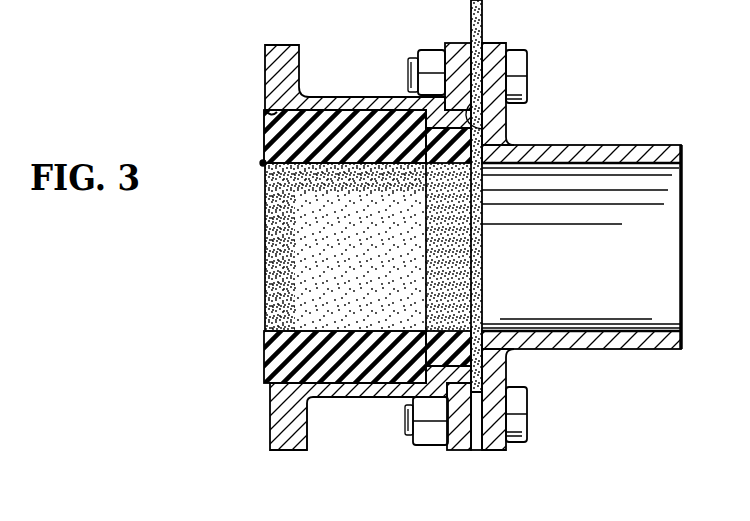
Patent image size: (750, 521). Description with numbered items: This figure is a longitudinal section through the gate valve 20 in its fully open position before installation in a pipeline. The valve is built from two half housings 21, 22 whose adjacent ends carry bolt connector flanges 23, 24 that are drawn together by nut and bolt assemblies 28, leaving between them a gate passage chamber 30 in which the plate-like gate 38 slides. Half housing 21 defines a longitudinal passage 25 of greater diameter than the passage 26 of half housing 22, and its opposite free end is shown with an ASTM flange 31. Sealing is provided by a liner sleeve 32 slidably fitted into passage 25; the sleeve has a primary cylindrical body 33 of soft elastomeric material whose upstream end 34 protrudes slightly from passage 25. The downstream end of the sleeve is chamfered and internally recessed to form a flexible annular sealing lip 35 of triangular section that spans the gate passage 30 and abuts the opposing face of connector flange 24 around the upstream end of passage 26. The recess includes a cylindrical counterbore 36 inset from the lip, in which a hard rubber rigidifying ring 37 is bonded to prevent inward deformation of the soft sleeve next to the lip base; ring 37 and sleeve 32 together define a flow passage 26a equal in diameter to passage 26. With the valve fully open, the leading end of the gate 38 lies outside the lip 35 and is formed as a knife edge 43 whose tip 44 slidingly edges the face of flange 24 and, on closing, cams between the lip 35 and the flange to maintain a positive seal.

The gate valve 20 is at (333, 88).
The half housing 21 is at (373, 388).
The half housing 22 is at (636, 151).
The bolt connector flange 23 is at (456, 52).
The bolt connector flange 24 is at (486, 52).
The longitudinal passage 25 is at (266, 115).
The longitudinal passage 26 is at (655, 165).
The flow passage 26a is at (318, 166).
The nut and bolt assembly 28 is at (519, 72).
The gate passage chamber 30 is at (374, 4).
The ASTM flange 31 is at (300, 432).
The liner sleeve 32 is at (262, 163).
The primary cylindrical body 33 is at (353, 150).
The upstream end 34 is at (265, 139).
The annular sealing lip 35 is at (479, 376).
The cylindrical counterbore 36 is at (458, 331).
The rigidifying ring 37 is at (460, 226).
The plate-like gate 38 is at (523, 4).
The knife edge 43 is at (479, 135).
The tip 44 is at (478, 118).